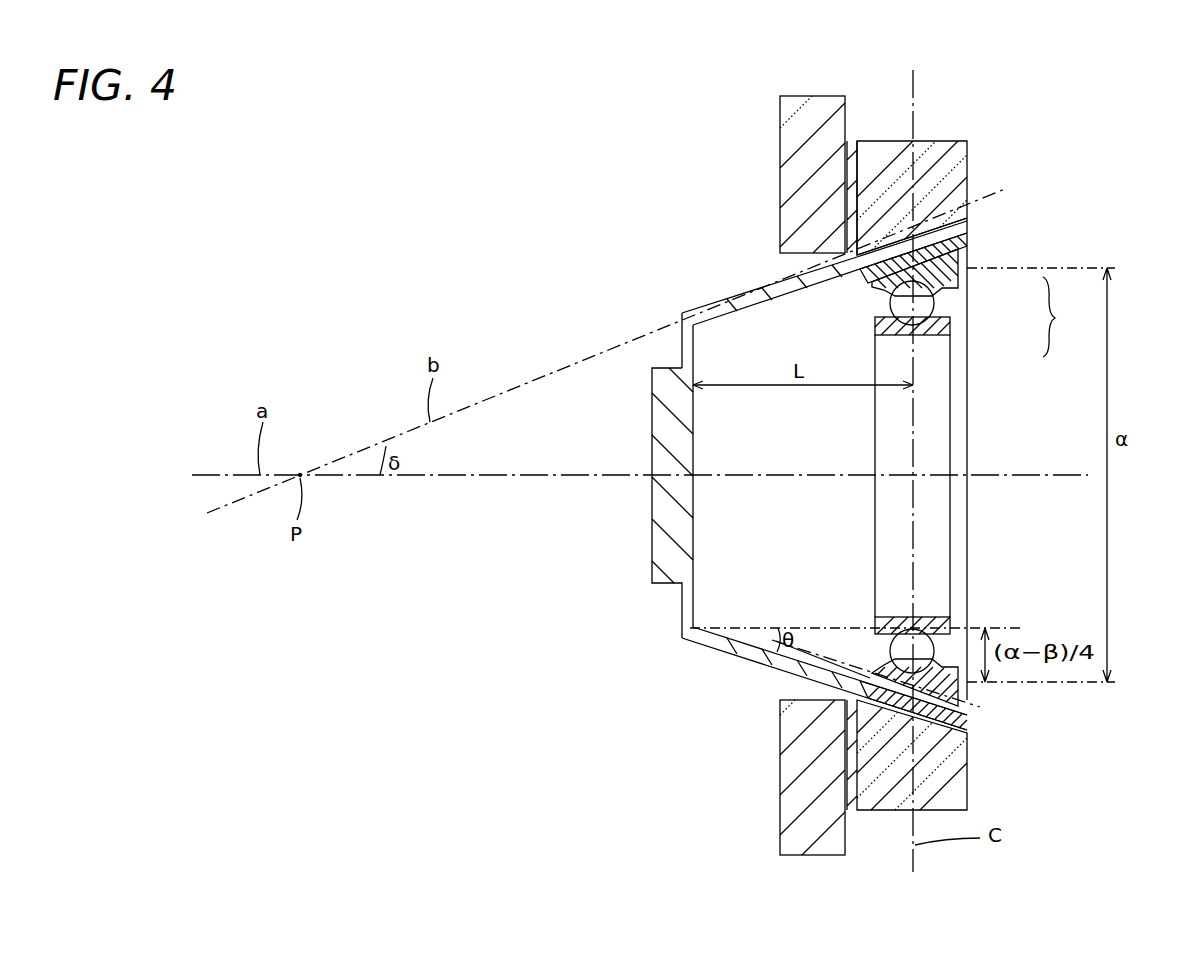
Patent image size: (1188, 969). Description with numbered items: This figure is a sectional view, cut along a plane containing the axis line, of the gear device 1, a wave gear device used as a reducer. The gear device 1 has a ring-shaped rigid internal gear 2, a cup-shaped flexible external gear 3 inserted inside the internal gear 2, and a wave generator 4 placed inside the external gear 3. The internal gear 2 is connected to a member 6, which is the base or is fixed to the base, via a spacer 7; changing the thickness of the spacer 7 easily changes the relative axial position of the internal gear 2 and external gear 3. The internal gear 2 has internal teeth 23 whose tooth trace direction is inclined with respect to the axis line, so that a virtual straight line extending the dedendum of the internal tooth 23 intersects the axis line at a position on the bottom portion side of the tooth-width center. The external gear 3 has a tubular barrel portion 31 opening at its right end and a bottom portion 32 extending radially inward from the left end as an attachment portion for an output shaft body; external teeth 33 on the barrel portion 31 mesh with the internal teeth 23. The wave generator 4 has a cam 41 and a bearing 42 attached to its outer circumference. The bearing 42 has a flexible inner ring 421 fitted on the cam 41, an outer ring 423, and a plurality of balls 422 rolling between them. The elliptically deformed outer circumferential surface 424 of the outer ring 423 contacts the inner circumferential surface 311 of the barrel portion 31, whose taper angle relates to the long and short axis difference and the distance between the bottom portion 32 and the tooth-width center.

The gear device 1 is at (1139, 156).
The internal gear 2 is at (955, 439).
The external gear 3 is at (809, 475).
The wave generator 4 is at (978, 484).
The member 6 is at (772, 142).
The spacer 7 is at (851, 150).
The internal tooth 23 is at (967, 215).
The barrel portion 31 is at (748, 653).
The bottom portion 32 is at (655, 548).
The external teeth 33 is at (967, 240).
The cam 41 is at (948, 393).
The bearing 42 is at (978, 484).
The inner ring 421 is at (950, 325).
The balls 422 is at (930, 300).
The outer ring 423 is at (950, 278).
The outer circumferential surface 424 is at (958, 693).
The inner circumferential surface 311 is at (790, 667).